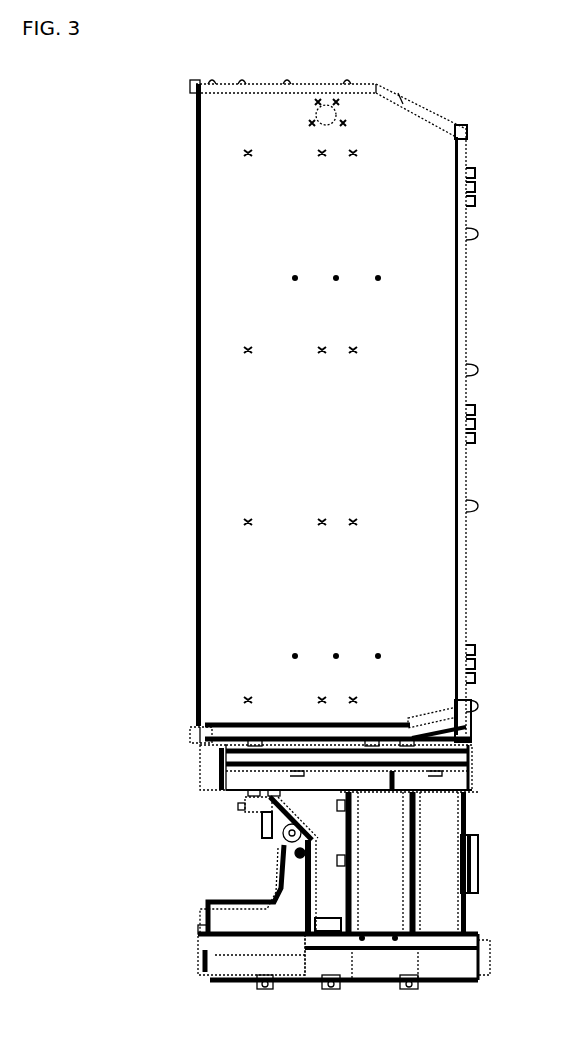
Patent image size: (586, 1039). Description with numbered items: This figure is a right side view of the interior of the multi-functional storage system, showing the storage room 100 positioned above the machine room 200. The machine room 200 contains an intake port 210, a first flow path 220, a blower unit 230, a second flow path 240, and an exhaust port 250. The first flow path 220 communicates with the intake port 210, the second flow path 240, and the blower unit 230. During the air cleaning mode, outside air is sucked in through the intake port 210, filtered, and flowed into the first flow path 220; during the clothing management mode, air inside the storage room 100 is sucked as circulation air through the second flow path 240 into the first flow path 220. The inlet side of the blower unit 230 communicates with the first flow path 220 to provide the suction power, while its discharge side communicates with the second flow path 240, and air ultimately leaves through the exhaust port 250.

The storage room 100 is at (215, 377).
The machine room 200 is at (168, 824).
The intake port 210 is at (210, 942).
The first flow path 220 is at (325, 886).
The blower unit 230 is at (452, 822).
The second flow path 240 is at (455, 778).
The exhaust port 250 is at (205, 770).